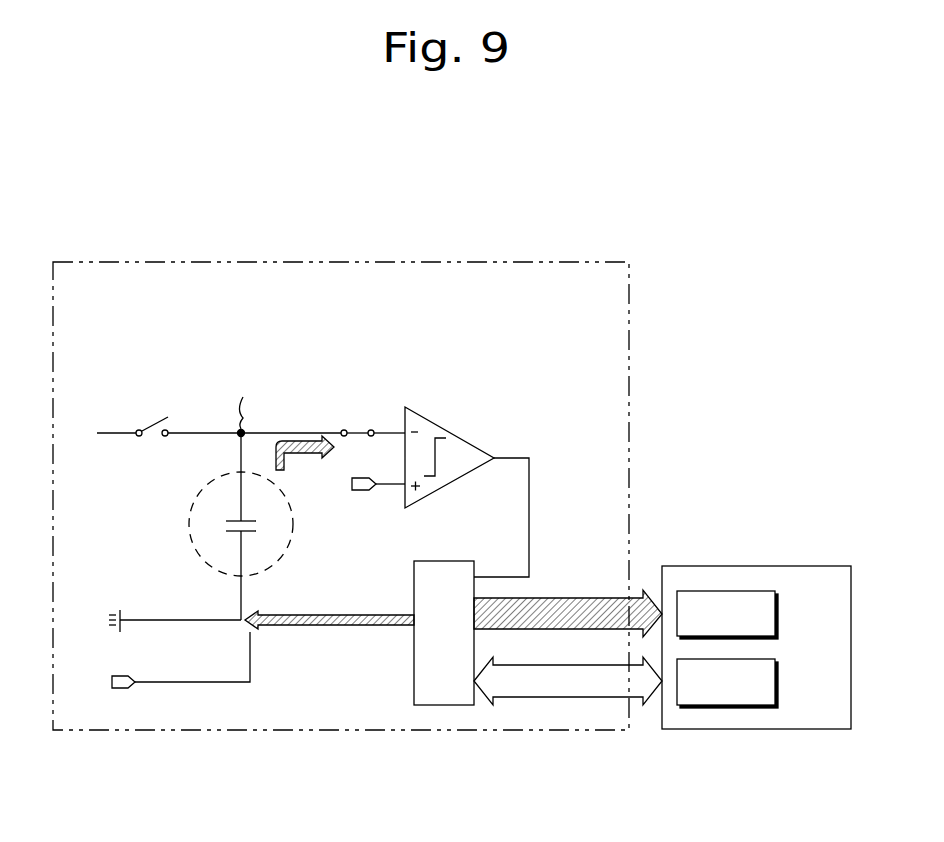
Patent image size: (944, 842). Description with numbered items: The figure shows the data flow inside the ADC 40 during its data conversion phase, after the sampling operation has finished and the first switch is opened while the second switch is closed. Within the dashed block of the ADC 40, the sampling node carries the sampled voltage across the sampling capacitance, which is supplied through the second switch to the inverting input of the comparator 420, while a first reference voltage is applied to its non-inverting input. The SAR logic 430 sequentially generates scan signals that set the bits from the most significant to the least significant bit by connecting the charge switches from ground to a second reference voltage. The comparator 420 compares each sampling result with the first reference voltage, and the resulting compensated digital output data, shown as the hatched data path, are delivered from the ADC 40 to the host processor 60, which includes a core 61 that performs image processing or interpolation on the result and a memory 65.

The ADC 40 is at (545, 262).
The comparator 420 is at (437, 407).
The SAR logic 430 is at (414, 687).
The host processor 60 is at (792, 566).
The core 61 is at (778, 612).
The memory 65 is at (778, 681).